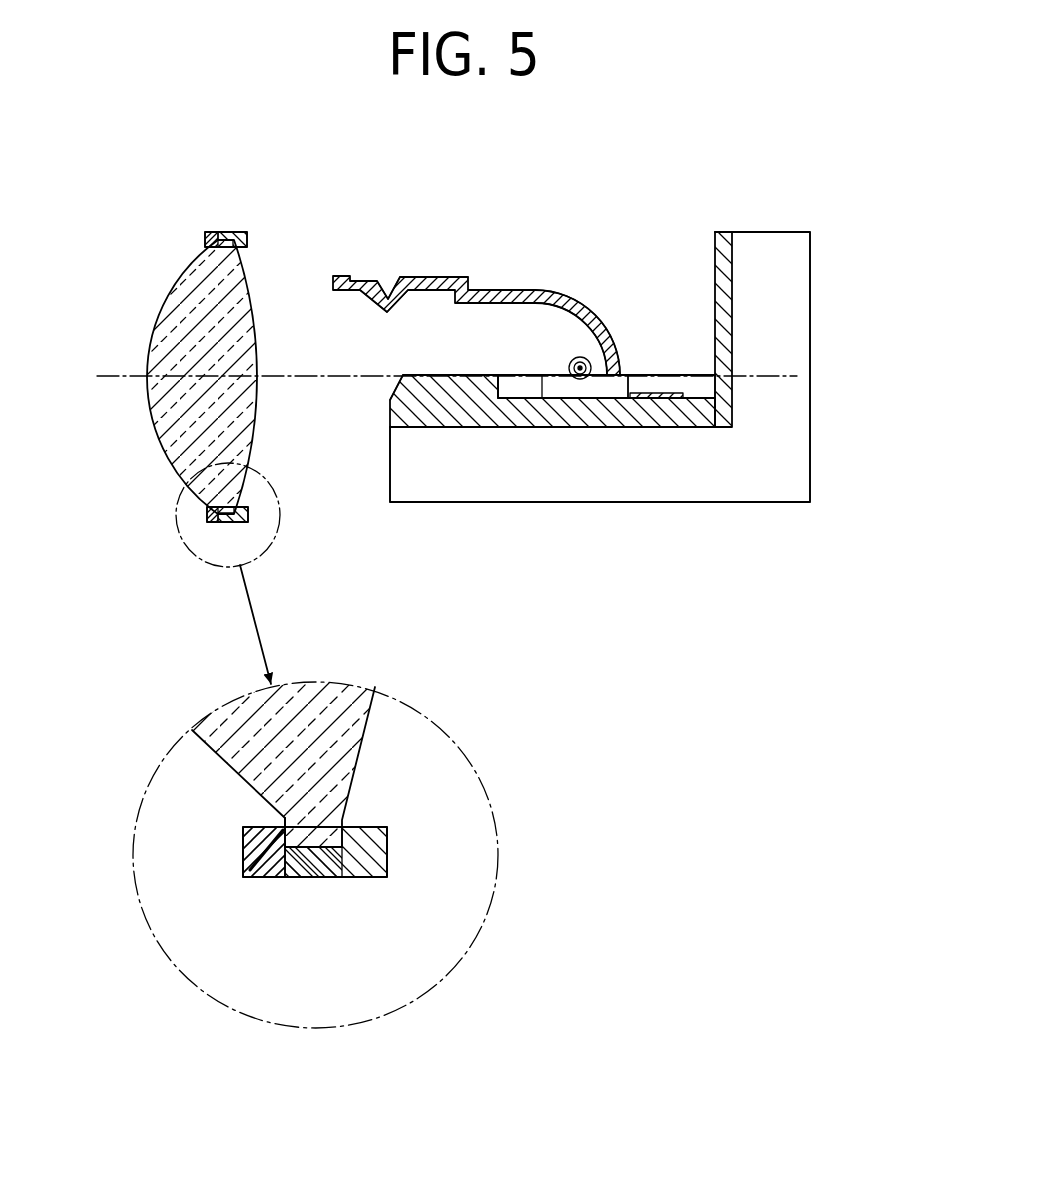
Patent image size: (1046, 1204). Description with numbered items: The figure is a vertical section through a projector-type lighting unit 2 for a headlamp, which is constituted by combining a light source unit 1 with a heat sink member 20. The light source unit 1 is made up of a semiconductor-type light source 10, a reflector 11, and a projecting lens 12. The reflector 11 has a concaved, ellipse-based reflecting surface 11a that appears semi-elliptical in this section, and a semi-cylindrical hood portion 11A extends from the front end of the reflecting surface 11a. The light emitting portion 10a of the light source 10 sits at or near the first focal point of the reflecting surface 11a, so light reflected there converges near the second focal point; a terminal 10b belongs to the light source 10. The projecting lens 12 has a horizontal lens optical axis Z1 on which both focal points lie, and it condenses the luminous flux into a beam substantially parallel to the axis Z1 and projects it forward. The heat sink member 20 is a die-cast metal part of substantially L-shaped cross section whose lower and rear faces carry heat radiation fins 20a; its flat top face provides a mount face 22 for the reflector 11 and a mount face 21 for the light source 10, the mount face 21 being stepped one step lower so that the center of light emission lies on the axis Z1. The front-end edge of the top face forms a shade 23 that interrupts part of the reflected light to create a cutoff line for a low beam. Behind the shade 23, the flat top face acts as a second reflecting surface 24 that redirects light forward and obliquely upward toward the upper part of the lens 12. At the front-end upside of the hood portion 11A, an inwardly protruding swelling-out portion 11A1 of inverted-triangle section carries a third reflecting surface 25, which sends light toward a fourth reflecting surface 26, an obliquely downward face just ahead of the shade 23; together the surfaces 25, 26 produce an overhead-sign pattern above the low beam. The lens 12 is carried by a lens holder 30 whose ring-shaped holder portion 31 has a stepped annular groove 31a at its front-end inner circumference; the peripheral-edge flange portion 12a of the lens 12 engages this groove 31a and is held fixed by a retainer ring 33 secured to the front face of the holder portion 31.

The light source unit 1 is at (493, 278).
The lighting unit 2 is at (658, 228).
The semiconductor-type light source 10 is at (562, 357).
The light emitting portion 10a is at (583, 380).
The terminal 10b is at (685, 399).
The reflector 11 is at (600, 305).
The reflecting surface 11a is at (568, 325).
The hood portion 11A is at (435, 278).
The swelling-out portion 11A1 is at (378, 283).
The projecting lens 12 is at (160, 318).
The peripheral-edge flange portion 12a is at (243, 838).
The heat sink member 20 is at (737, 269).
The heat radiation fins 20a is at (783, 435).
The mount face 21 is at (722, 373).
The mount face 22 is at (662, 373).
The shade 23 is at (411, 376).
The second reflecting surface 24 is at (456, 376).
The third reflecting surface 25 is at (388, 300).
The fourth reflecting surface 26 is at (388, 395).
The lens holder 30 is at (252, 517).
The holder portion 31 is at (238, 232).
The annular groove 31a is at (352, 848).
The retainer ring 33 is at (209, 240).
The lens optical axis Z1 is at (118, 383).